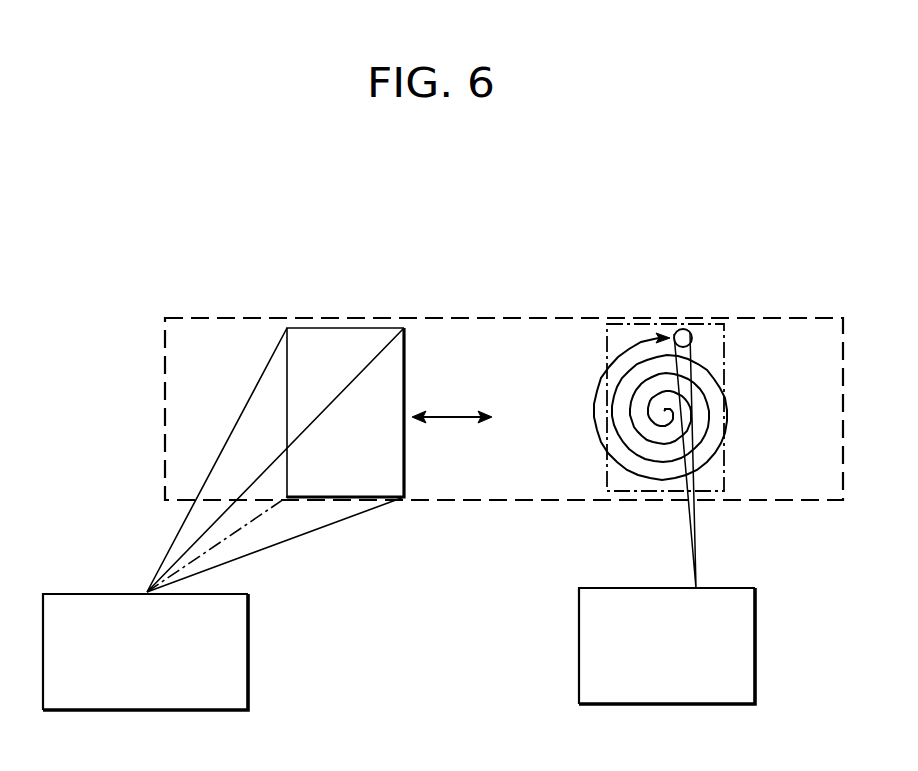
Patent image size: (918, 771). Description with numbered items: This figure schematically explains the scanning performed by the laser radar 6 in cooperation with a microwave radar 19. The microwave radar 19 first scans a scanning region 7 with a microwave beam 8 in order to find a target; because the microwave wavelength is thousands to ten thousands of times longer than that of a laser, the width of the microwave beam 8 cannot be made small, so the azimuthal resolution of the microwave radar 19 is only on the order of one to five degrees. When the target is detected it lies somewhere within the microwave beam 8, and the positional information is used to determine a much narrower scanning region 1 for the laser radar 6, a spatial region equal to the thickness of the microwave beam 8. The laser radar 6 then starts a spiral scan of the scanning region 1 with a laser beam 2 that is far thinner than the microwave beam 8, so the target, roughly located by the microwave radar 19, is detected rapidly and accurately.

The scanning region 1 is at (606, 328).
The laser beam 2 is at (684, 329).
The laser radar 6 is at (757, 638).
The scanning region 7 is at (170, 318).
The microwave beam 8 is at (362, 468).
The microwave radar 19 is at (250, 645).